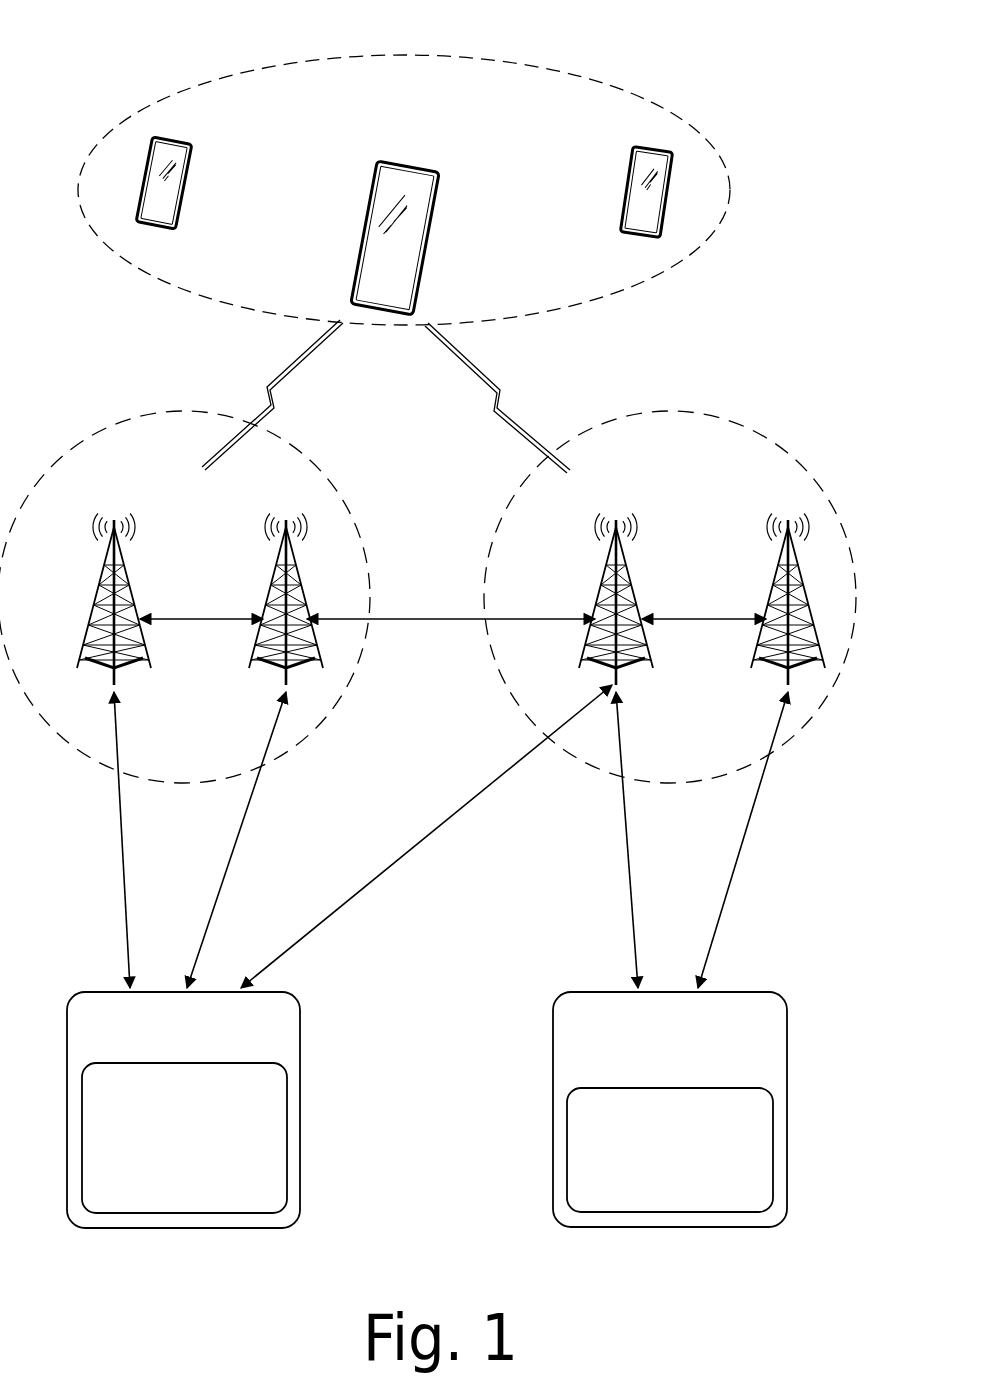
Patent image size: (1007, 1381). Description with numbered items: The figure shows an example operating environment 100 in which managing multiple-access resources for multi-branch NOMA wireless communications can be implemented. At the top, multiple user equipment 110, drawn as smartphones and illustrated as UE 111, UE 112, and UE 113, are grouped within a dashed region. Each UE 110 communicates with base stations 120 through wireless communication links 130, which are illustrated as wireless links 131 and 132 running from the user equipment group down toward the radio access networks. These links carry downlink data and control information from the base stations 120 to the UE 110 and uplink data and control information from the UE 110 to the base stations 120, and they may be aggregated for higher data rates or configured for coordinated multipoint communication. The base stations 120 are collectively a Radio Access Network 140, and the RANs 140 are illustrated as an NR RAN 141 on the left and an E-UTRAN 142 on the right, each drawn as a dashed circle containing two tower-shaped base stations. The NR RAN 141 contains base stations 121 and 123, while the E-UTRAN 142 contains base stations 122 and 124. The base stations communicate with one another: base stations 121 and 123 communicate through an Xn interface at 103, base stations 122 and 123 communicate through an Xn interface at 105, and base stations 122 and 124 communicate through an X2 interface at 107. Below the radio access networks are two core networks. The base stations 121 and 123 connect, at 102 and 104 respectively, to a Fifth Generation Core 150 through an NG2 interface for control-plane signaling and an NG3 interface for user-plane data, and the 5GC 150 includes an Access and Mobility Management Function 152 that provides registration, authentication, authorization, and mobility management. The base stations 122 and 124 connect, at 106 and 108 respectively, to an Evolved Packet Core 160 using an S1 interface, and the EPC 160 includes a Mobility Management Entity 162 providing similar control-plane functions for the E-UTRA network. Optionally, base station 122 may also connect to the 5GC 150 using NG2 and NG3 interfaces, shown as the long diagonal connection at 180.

The operating environment 100 is at (145, 36).
The user equipment 110 is at (648, 98).
The UE 111 is at (441, 168).
The UE 112 is at (195, 142).
The UE 113 is at (632, 150).
The wireless communication links 130 is at (390, 396).
The wireless link 131 is at (255, 395).
The wireless link 132 is at (519, 393).
The Radio Access Network 140 is at (426, 432).
The NR RAN 141 is at (323, 477).
The E-UTRAN 142 is at (530, 477).
The base stations 120 is at (172, 492).
The base station 121 is at (100, 585).
The base station 122 is at (605, 585).
The base station 123 is at (275, 585).
The base station 124 is at (778, 585).
The Xn interface connection 103 is at (226, 623).
The Xn interface connection 105 is at (456, 623).
The X2 interface connection 107 is at (740, 623).
The connection to 5GC 102 is at (123, 832).
The connection to 5GC 104 is at (241, 832).
The connection to EPC 106 is at (618, 832).
The connection to EPC 108 is at (742, 832).
The connection of base station 122 to 5GC 180 is at (401, 862).
The Fifth Generation Core network 150 is at (183, 1110).
The Access and Mobility Management Function 152 is at (184, 1138).
The Evolved Packet Core 160 is at (670, 1109).
The Mobility Management Entity 162 is at (670, 1150).